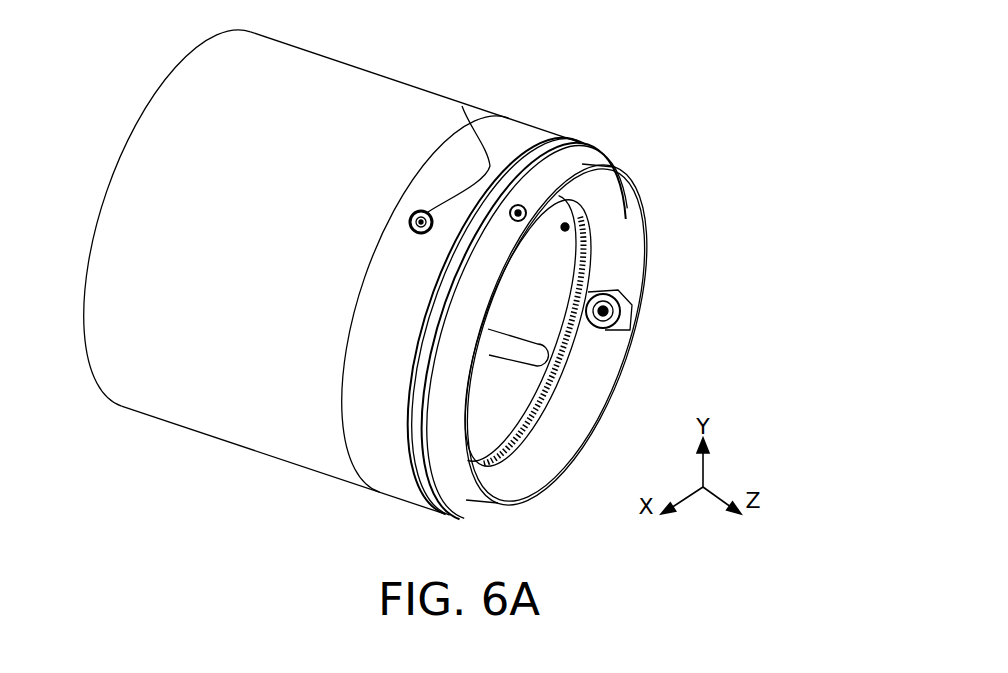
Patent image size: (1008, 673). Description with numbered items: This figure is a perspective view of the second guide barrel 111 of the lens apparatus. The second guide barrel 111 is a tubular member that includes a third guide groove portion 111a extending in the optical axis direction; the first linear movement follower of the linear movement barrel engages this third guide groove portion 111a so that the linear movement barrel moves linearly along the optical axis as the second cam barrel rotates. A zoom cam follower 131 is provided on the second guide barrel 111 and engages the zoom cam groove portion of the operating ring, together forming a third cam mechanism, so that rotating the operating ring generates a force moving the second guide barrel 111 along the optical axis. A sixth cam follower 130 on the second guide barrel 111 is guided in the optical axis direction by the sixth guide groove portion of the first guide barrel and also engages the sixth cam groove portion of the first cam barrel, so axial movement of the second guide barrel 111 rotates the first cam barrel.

The second guide barrel 111 is at (337, 90).
The zoom cam follower 131 is at (502, 78).
The sixth cam follower 130 is at (624, 180).
The third guide groove portion 111a is at (541, 352).